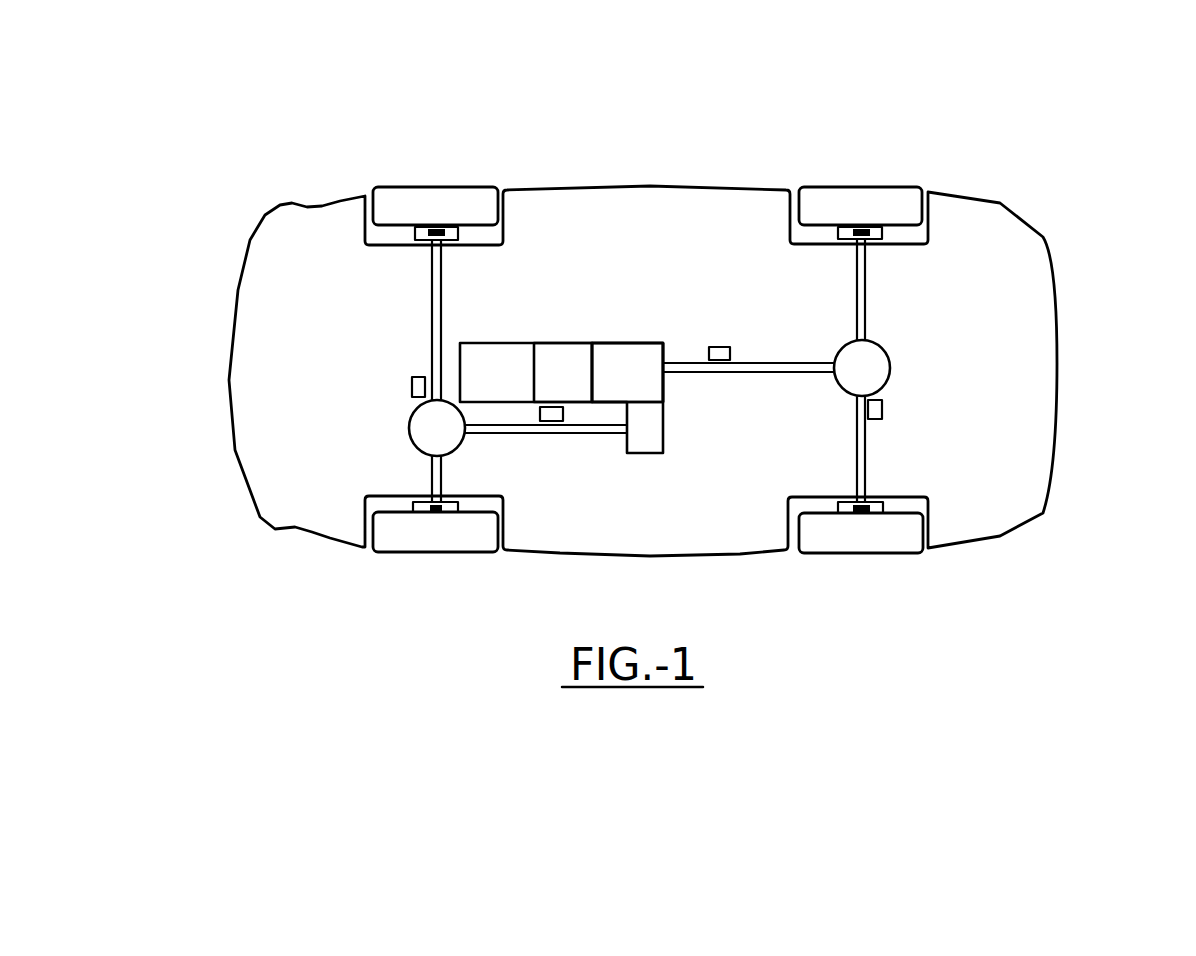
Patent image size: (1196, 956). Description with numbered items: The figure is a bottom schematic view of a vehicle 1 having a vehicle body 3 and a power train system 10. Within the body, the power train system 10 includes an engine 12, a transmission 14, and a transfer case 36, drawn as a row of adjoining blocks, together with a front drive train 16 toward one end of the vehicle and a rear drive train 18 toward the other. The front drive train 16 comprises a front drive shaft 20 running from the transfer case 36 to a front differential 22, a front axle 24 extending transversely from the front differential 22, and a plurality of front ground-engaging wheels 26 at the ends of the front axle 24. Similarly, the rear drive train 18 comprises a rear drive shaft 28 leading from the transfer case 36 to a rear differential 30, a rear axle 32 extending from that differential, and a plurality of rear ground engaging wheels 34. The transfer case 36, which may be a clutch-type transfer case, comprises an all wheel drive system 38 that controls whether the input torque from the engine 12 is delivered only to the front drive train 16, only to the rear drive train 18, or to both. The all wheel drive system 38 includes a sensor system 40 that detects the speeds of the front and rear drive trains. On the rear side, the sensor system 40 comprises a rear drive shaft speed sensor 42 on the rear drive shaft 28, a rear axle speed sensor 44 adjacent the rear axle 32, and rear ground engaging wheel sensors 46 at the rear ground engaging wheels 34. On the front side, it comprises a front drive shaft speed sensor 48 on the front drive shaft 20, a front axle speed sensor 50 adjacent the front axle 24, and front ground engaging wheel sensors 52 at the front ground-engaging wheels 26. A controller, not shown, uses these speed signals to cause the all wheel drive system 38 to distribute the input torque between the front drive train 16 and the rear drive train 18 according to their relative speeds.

The vehicle 1 is at (1013, 155).
The vehicle body 3 is at (620, 205).
The power train system 10 is at (718, 598).
The engine 12 is at (491, 356).
The transmission 14 is at (571, 358).
The front drive train 16 is at (285, 387).
The rear drive train 18 is at (990, 362).
The front drive shaft 20 is at (531, 433).
The front differential 22 is at (416, 430).
The front axle 24 is at (434, 300).
The front ground-engaging wheels 26 is at (438, 200).
The rear drive shaft 28 is at (778, 371).
The rear differential 30 is at (868, 352).
The rear axle 32 is at (866, 290).
The rear ground engaging wheels 34 is at (848, 200).
The transfer case 36 is at (636, 356).
The all wheel drive system 38 is at (627, 372).
The sensor system 40 is at (758, 340).
The rear drive shaft speed sensor 42 is at (718, 352).
The rear axle speed sensor 44 is at (883, 410).
The rear ground engaging wheel sensors 46 is at (862, 234).
The front drive shaft speed sensor 48 is at (553, 417).
The front axle speed sensor 50 is at (412, 387).
The front ground engaging wheel sensors 52 is at (435, 232).